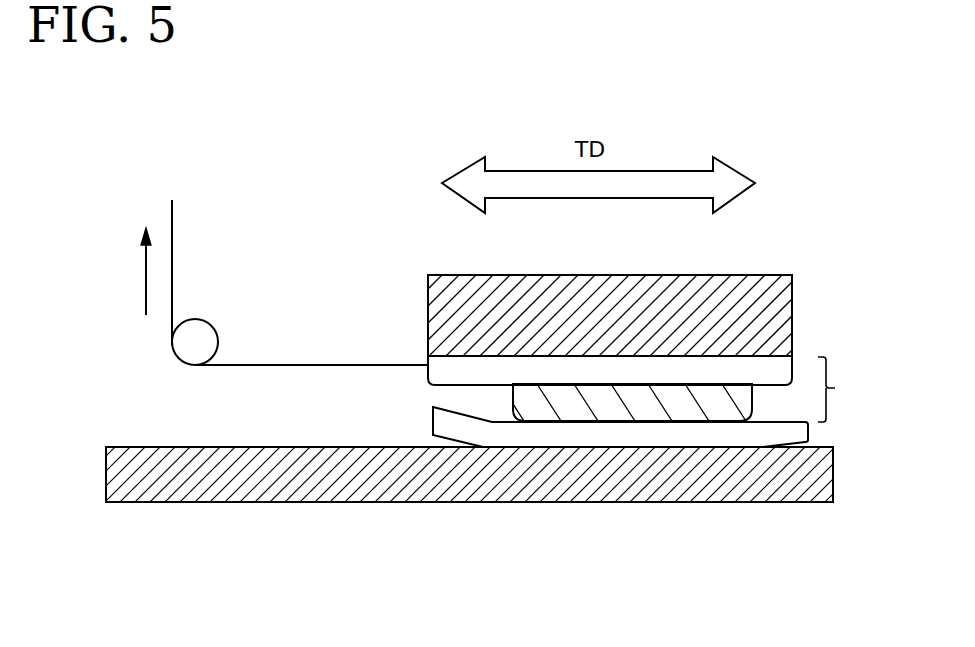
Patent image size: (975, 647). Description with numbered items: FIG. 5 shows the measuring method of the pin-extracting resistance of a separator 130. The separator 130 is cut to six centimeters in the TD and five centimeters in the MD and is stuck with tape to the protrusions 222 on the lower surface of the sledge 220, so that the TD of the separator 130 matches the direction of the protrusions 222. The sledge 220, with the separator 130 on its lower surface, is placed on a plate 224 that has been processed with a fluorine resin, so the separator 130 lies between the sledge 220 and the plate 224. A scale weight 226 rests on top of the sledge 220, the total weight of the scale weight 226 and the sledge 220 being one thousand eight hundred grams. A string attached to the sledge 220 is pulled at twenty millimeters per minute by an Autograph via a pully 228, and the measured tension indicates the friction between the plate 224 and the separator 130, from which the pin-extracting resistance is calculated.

The scale weight 226 is at (606, 275).
The protrusions 222 is at (712, 402).
The separator 130 is at (613, 437).
The plate 224 is at (340, 492).
The pully 228 is at (187, 352).
The sledge 220 is at (852, 389).